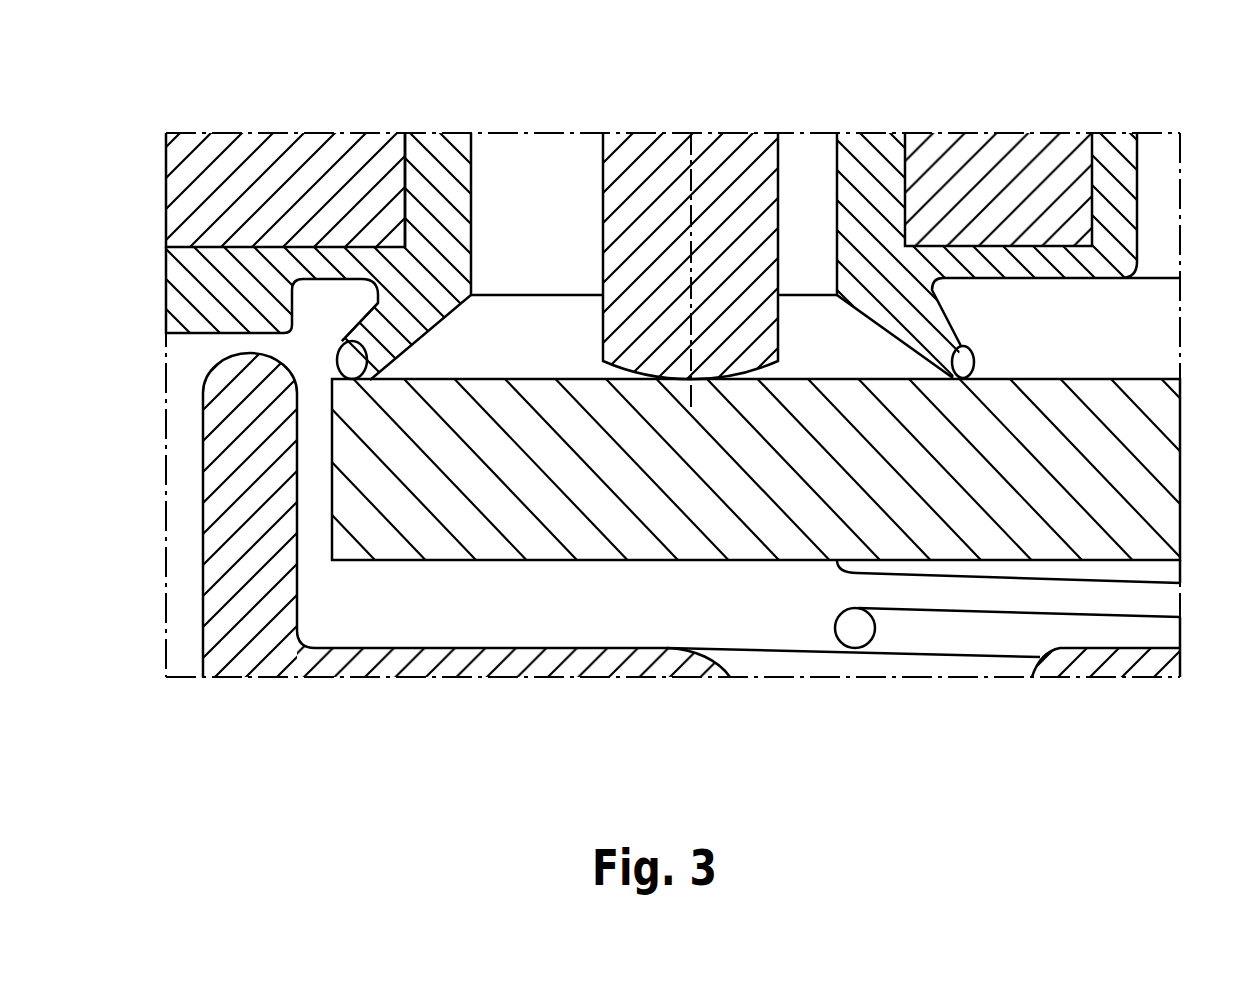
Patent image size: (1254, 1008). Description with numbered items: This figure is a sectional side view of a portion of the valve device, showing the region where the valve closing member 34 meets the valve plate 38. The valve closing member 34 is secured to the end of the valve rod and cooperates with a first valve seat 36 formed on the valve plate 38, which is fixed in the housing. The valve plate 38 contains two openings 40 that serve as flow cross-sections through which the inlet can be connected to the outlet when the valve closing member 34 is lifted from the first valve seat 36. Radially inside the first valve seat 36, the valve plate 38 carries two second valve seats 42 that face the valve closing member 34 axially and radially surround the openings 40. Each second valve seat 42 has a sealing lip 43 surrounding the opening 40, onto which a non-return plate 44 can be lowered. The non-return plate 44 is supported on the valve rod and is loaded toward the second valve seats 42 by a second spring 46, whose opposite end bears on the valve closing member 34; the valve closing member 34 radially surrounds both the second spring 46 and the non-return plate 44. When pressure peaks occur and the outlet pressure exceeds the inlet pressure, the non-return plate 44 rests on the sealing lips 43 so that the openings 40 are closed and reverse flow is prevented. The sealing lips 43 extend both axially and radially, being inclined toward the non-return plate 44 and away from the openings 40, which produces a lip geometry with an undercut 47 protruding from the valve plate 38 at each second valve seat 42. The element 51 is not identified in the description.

The valve closing member 34 is at (247, 627).
The first valve seat 36 is at (197, 337).
The valve plate 38 is at (350, 172).
The openings 40 is at (538, 293).
The second valve seats 42 is at (357, 383).
The sealing lip 43 is at (340, 338).
The non-return plate 44 is at (452, 510).
The second spring 46 is at (923, 627).
The undercut 47 is at (350, 300).
The pin 51 is at (655, 190).